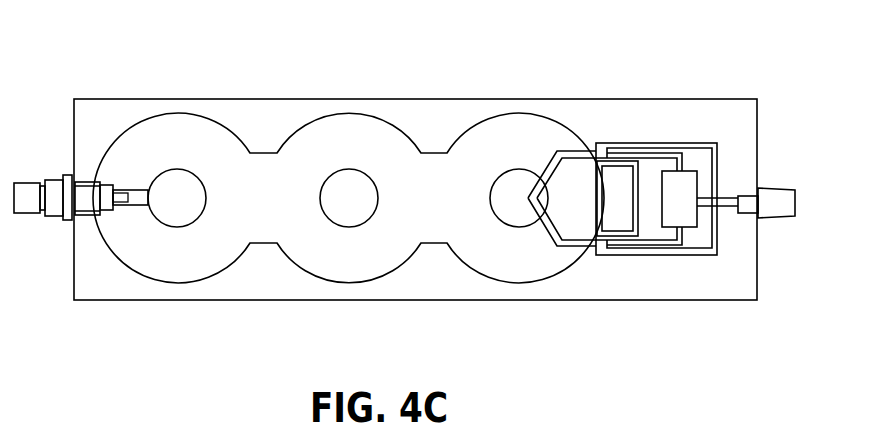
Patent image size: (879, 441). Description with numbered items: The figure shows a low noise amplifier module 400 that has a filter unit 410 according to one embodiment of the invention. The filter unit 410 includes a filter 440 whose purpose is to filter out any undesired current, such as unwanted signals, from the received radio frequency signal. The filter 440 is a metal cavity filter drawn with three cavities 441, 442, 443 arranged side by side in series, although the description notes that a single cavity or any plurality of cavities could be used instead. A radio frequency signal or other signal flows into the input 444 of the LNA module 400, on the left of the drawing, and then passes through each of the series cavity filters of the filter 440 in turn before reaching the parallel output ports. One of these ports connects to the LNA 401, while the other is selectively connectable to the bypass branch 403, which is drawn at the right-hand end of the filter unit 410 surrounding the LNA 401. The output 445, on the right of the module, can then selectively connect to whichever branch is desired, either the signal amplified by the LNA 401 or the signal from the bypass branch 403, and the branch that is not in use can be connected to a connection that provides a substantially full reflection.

The low noise amplifier (LNA) module 400 is at (75, 48).
The filter unit 410 is at (174, 327).
The filter 440 is at (578, 92).
The cavity 441 is at (247, 170).
The cavity 442 is at (420, 170).
The cavity 443 is at (590, 170).
The bypass branch 403 is at (622, 152).
The LNA 401 is at (680, 210).
The input 444 is at (15, 214).
The output 445 is at (768, 187).